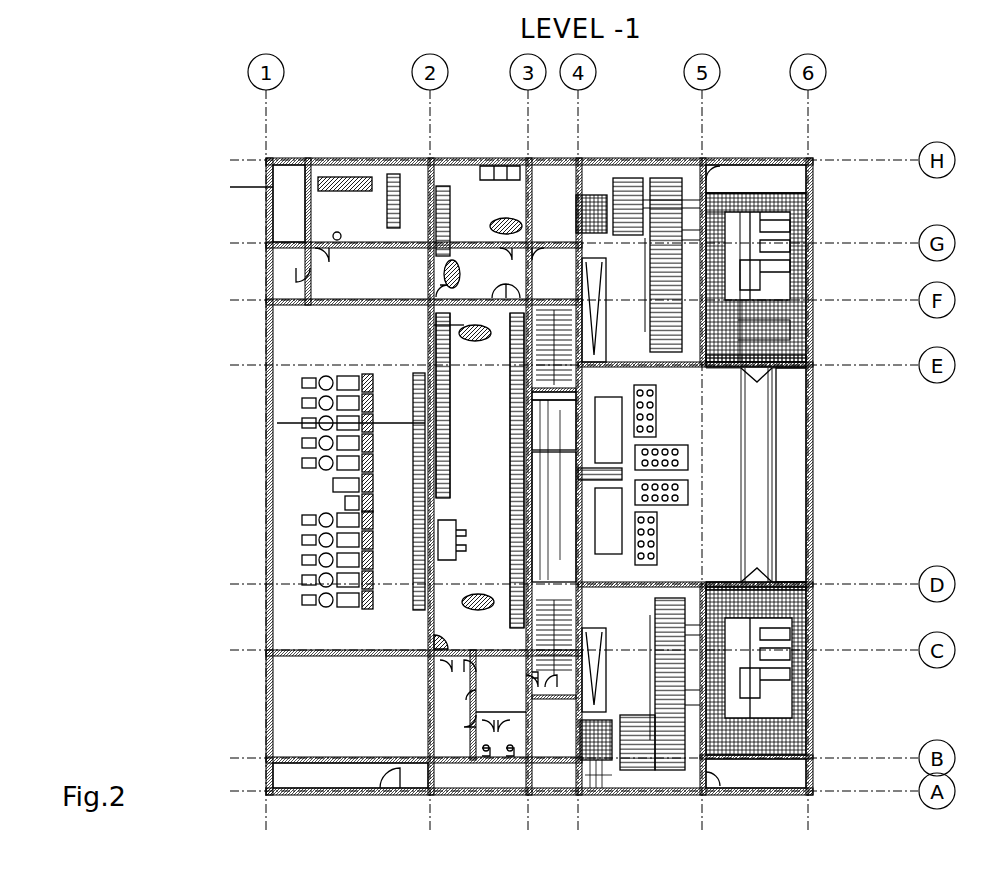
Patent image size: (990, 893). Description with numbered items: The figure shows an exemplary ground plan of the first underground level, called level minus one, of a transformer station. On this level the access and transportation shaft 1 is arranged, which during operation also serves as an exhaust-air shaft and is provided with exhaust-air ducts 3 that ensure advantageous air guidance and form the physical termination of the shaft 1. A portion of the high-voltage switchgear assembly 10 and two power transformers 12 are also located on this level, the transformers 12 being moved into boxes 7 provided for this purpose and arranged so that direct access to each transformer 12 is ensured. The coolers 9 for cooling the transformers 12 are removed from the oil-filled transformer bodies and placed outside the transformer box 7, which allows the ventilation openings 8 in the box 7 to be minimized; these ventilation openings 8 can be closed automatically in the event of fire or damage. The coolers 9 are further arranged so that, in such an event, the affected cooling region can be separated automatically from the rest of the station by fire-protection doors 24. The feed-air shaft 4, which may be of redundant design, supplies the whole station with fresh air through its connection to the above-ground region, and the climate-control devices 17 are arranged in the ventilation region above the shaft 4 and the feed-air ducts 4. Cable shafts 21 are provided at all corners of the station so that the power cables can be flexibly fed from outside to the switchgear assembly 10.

The access and transportation shaft 1 is at (796, 410).
The exhaust-air ducts 3 is at (796, 362).
The feed-air shaft 4 is at (592, 198).
The transformer box 7 is at (782, 281).
The ventilation openings 8 is at (800, 584).
The coolers 9 is at (630, 182).
The high-voltage switchgear assembly 10 is at (300, 441).
The power transformers 12 is at (752, 248).
The climate-control devices 17 is at (652, 410).
The cable shafts 21 is at (272, 186).
The fire-protection doors 24 is at (667, 577).